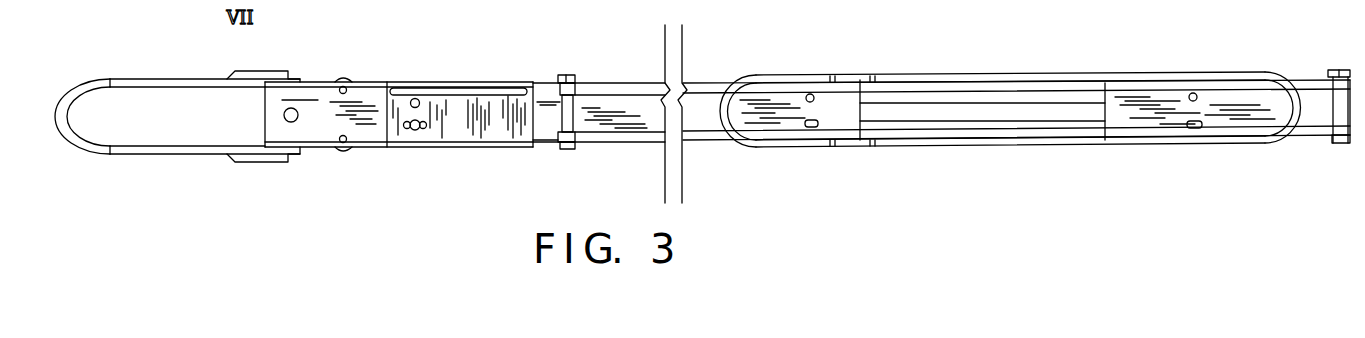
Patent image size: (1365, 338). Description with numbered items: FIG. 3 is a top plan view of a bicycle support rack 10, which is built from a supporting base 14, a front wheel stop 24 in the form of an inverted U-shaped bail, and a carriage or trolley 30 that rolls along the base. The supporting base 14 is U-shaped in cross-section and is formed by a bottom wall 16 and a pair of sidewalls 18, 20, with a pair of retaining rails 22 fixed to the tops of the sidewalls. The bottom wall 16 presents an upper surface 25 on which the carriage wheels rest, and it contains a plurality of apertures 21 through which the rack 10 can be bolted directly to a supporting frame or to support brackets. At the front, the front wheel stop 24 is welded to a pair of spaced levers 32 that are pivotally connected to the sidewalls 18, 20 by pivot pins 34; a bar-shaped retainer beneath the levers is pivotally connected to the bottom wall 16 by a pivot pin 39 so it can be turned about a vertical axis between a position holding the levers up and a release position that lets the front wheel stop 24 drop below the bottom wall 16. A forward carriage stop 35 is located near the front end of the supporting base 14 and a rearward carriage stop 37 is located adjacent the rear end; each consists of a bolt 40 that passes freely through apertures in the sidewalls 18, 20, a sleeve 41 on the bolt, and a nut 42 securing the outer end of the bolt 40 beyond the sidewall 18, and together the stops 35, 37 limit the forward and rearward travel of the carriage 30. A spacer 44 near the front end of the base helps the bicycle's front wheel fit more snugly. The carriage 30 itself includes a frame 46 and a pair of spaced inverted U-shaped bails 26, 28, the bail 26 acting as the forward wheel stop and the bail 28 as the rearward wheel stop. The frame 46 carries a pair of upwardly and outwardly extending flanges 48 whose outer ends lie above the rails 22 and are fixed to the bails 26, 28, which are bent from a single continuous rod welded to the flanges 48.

The bicycle support rack 10 is at (866, 61).
The supporting base 14 is at (412, 162).
The bottom wall 16 is at (313, 98).
The sidewall 18 is at (533, 81).
The sidewall 20 is at (548, 144).
The apertures 21 is at (808, 102).
The retaining rails 22 is at (693, 100).
The front wheel stop 24 is at (168, 78).
The upper surface 25 is at (1122, 105).
The bail 26 is at (737, 80).
The bail 28 is at (1238, 73).
The carriage 30 is at (968, 66).
The levers 32 is at (327, 84).
The pivot pins 34 is at (341, 79).
The forward carriage stop 35 is at (609, 163).
The rearward carriage stop 37 is at (1305, 147).
The pivot pin 39 is at (286, 121).
The bolt 40 is at (570, 146).
The sleeve 41 is at (567, 117).
The nut 42 is at (574, 77).
The spacer 44 is at (386, 66).
The frame 46 is at (465, 126).
The flanges 48 is at (425, 92).